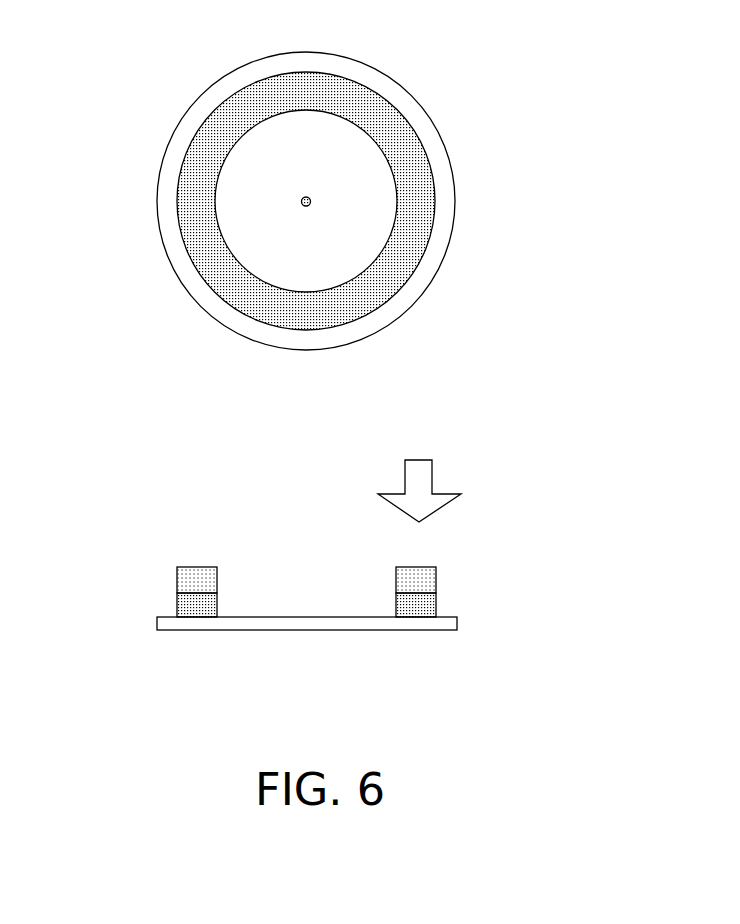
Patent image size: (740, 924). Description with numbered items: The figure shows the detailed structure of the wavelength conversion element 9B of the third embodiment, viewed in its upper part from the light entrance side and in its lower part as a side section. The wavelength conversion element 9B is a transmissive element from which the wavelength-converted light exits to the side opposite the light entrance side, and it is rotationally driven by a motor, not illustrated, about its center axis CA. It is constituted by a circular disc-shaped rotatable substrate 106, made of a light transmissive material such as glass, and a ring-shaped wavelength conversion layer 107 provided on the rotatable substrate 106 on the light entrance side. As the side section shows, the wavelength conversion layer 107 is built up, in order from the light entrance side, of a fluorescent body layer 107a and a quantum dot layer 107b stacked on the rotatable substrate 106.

The rotatable substrate 106 is at (325, 66).
The wavelength conversion layer 107 is at (403, 345).
The fluorescent body layer 107a is at (437, 580).
The quantum dot layer 107b is at (369, 596).
The center axis CA is at (303, 209).
The wavelength conversion element 9B is at (558, 42).